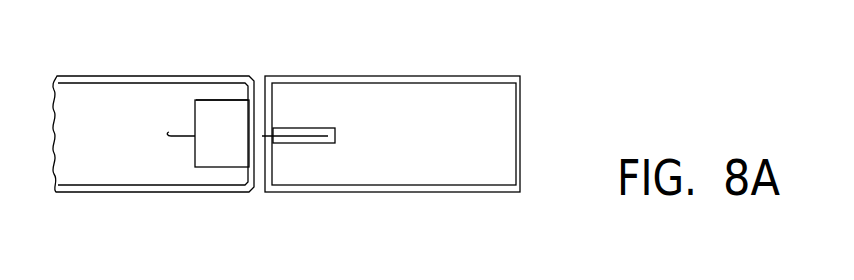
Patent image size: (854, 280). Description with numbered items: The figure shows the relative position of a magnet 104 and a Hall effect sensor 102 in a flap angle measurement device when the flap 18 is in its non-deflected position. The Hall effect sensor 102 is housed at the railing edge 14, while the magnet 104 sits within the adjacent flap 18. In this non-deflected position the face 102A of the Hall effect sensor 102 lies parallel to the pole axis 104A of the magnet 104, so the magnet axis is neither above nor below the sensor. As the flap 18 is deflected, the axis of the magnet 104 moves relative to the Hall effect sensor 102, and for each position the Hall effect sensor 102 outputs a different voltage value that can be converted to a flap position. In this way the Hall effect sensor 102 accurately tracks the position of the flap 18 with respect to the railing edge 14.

The railing edge 14 is at (120, 76).
The flap 18 is at (428, 76).
The Hall effect sensor 102 is at (220, 150).
The face of the Hall effect sensor 102A is at (225, 100).
The magnet 104 is at (328, 128).
The pole axis of the magnet 104A is at (342, 135).